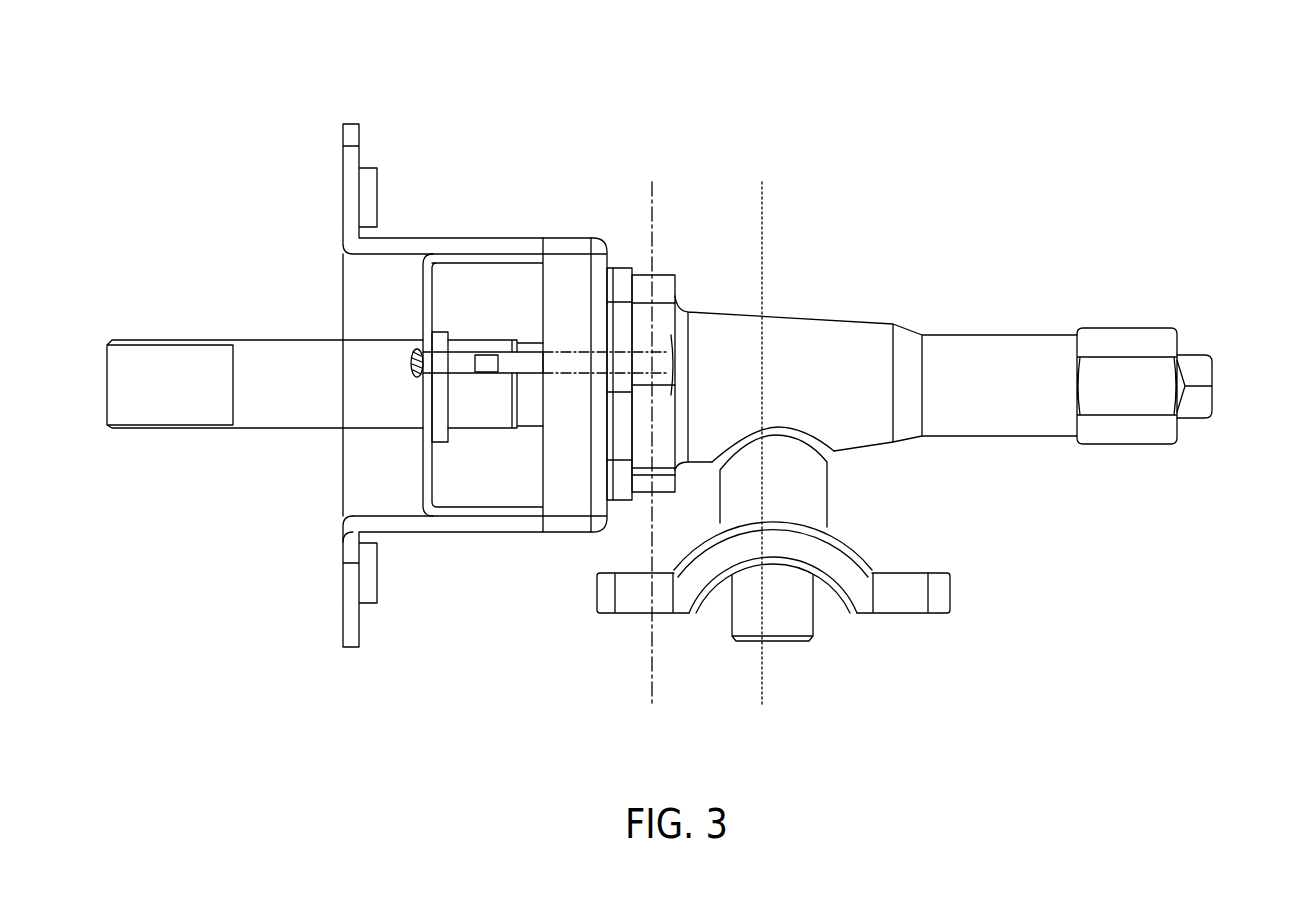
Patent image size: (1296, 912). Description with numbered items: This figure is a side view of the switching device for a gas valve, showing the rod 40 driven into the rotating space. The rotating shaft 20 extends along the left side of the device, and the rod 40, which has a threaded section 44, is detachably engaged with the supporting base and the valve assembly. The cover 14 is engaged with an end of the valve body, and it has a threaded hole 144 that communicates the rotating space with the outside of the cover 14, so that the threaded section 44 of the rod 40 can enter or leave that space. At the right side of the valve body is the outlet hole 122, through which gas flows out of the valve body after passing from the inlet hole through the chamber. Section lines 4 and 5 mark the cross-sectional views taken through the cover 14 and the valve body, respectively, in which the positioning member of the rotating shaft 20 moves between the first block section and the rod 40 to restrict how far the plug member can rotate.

The cover 14 is at (638, 285).
The rotating shaft 20 is at (278, 336).
The rod 40 is at (457, 363).
The threaded section 44 is at (640, 365).
The outlet hole 122 is at (1213, 383).
The threaded hole 144 is at (614, 270).
The section line 4- 4 is at (655, 692).
The section line 5- 5 is at (765, 692).